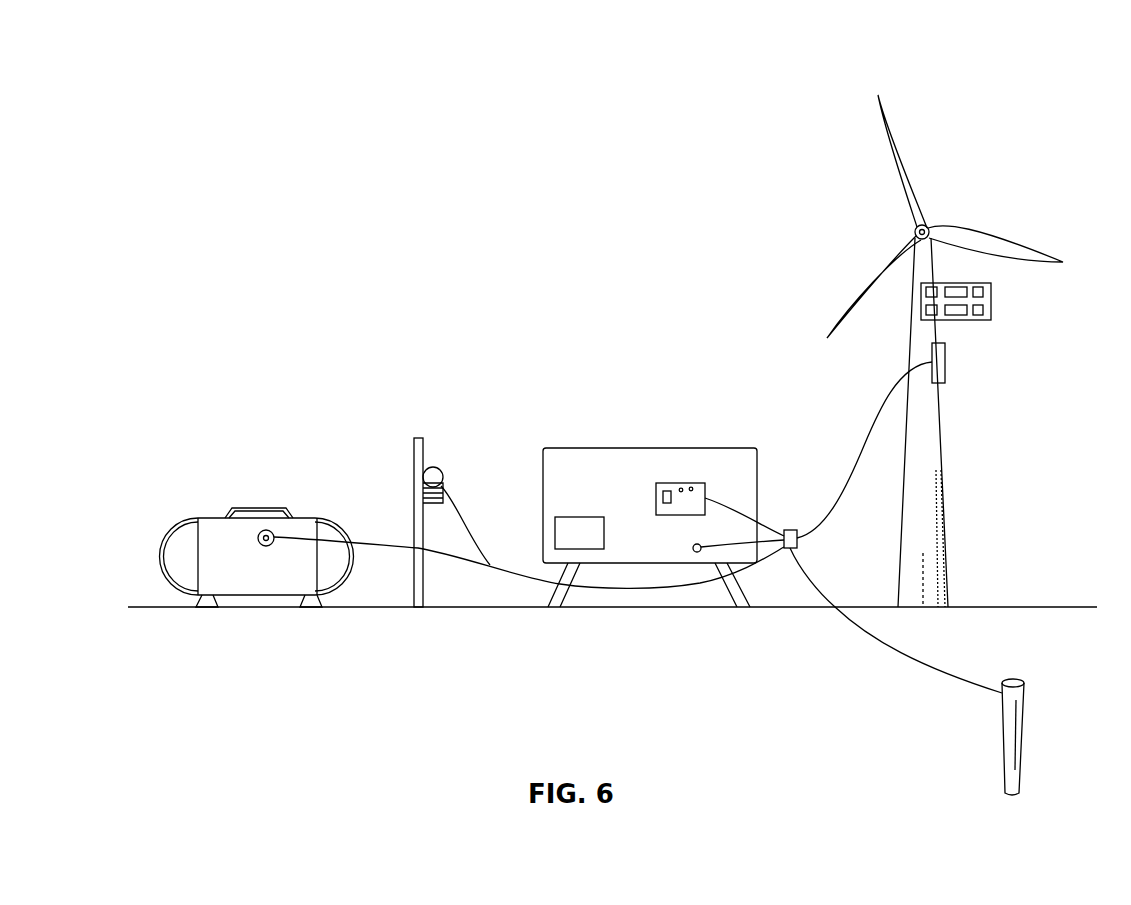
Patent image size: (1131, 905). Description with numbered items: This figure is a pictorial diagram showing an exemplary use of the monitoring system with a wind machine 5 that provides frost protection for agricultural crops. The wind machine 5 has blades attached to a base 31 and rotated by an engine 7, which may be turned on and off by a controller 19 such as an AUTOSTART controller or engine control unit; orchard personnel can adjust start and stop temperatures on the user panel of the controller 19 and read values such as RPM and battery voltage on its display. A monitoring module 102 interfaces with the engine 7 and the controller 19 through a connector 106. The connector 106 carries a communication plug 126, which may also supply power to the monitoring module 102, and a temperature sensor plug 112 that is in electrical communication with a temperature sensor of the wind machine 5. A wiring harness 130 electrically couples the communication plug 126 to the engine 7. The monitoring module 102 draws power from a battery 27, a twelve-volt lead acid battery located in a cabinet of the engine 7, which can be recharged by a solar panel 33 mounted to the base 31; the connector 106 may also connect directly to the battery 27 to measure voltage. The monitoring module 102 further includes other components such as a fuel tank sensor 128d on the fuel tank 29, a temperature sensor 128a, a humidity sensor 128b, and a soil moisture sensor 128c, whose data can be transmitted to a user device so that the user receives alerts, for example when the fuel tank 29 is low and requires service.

The wind machine 5 is at (882, 270).
The engine 7 is at (577, 458).
The controller 19 is at (685, 483).
The battery 27 is at (555, 531).
The gas supply tank 29 is at (327, 520).
The base 31 is at (912, 340).
The solar panel 33 is at (988, 300).
The monitoring module 102 is at (945, 364).
The connector 106 is at (861, 456).
The temperature sensor plug 112 is at (697, 552).
The communication plug 126 is at (797, 548).
The temperature sensor 128a is at (452, 498).
The humidity sensor 128b is at (441, 471).
The soil moisture sensor 128c is at (1025, 695).
The fuel tank sensor 128d is at (261, 531).
The wiring harness 130 is at (733, 502).